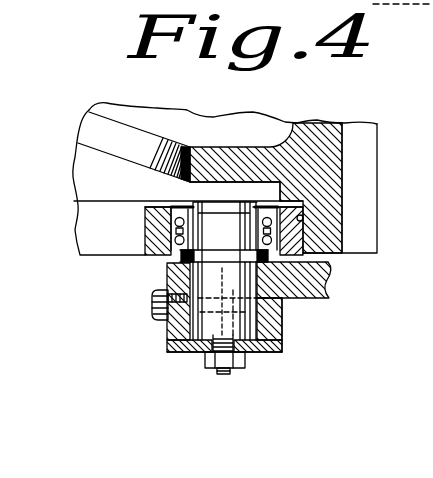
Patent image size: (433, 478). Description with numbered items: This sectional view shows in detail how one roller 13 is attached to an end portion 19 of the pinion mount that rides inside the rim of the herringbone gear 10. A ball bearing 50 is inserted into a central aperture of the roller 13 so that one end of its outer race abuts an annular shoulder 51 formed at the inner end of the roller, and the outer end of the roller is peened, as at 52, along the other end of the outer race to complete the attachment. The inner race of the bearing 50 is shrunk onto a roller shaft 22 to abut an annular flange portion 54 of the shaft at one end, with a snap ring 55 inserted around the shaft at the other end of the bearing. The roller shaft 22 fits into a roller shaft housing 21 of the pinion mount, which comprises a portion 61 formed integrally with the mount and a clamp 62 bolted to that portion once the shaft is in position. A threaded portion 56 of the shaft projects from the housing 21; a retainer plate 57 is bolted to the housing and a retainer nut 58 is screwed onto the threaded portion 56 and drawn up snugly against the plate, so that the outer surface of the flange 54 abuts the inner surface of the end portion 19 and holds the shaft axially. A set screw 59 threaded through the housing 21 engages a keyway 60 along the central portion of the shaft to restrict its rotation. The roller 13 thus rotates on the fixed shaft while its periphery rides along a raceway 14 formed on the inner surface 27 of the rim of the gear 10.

The herringbone gear 10 is at (248, 146).
The raceway 14 is at (90, 221).
The annular shoulder 51 is at (181, 203).
The snap ring 55 is at (280, 199).
The inner surface of the rim 27 is at (303, 218).
The roller 13 is at (144, 231).
The ball bearing 50 is at (173, 217).
The annular flange portion 54 is at (217, 249).
The peened portion 52 is at (171, 260).
The roller shaft 22 is at (220, 292).
The keyway 60 is at (167, 328).
The set screw 59 is at (163, 291).
The clamp 62 is at (167, 341).
The retainer plate 57 is at (273, 352).
The portion of the housing 61 is at (283, 336).
The roller shaft housing 21 is at (283, 323).
The end portion 19 is at (331, 277).
The retainer nut 58 is at (205, 358).
The threaded portion 56 is at (218, 374).